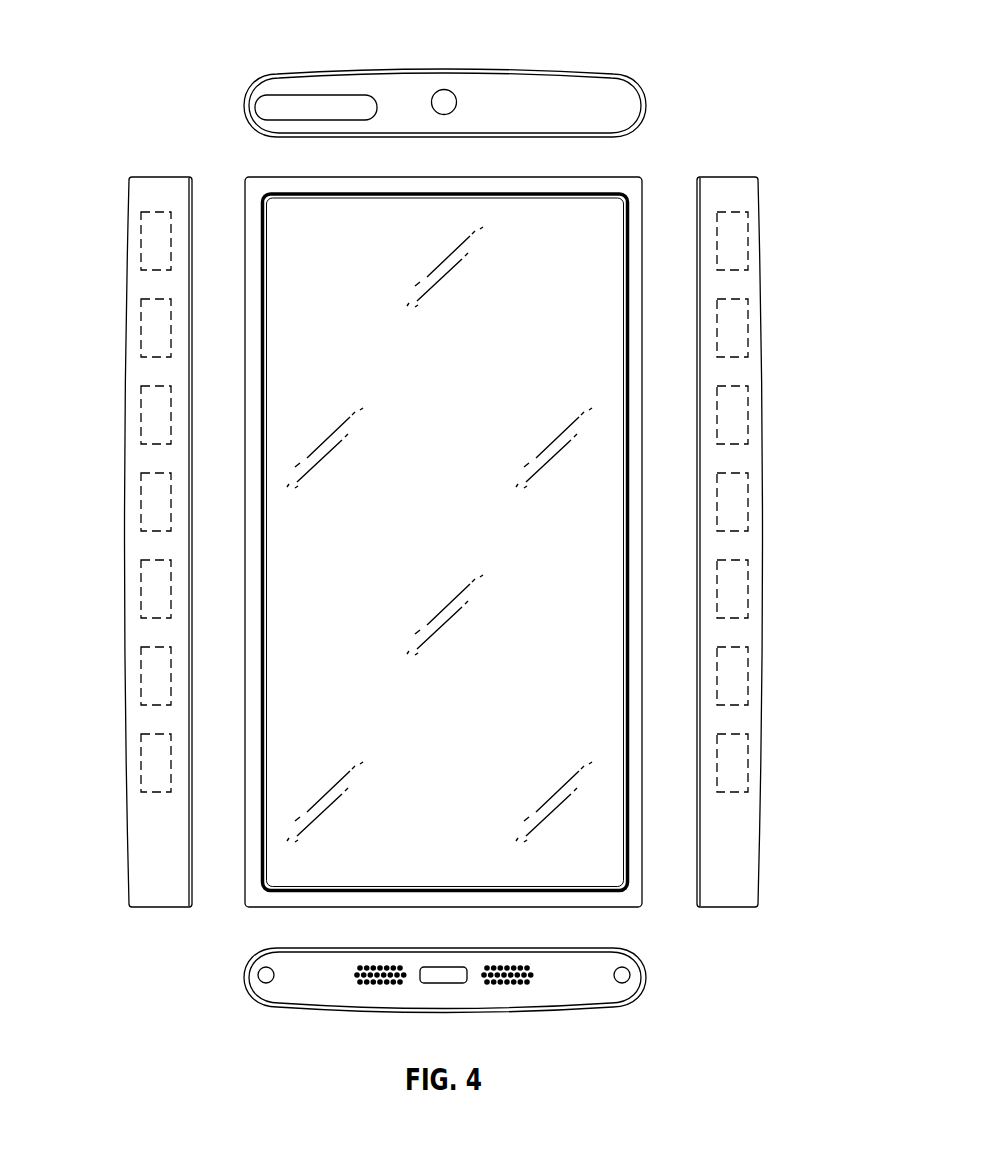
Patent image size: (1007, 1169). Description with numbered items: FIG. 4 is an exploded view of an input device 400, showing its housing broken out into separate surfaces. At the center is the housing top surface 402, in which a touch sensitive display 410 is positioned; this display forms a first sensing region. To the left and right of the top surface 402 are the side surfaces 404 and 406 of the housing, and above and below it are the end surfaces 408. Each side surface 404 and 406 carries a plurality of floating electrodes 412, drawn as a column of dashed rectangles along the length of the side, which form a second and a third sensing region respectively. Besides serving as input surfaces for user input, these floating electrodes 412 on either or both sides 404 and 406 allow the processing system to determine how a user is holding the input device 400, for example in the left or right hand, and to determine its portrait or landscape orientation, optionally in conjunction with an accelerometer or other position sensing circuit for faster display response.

The input device 400 is at (735, 69).
The housing top surface 402 is at (260, 186).
The side surface 404 is at (762, 287).
The side surface 406 is at (127, 205).
The end surfaces 408 is at (620, 95).
The touch sensitive display 410 is at (465, 404).
The floating electrodes 412 is at (150, 411).